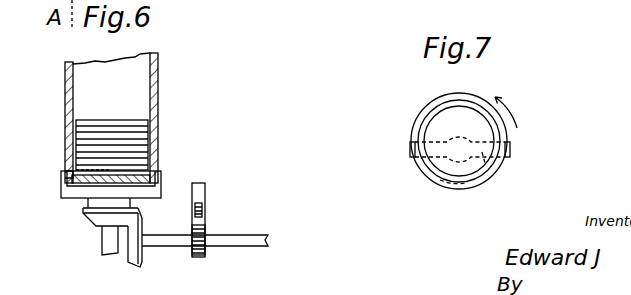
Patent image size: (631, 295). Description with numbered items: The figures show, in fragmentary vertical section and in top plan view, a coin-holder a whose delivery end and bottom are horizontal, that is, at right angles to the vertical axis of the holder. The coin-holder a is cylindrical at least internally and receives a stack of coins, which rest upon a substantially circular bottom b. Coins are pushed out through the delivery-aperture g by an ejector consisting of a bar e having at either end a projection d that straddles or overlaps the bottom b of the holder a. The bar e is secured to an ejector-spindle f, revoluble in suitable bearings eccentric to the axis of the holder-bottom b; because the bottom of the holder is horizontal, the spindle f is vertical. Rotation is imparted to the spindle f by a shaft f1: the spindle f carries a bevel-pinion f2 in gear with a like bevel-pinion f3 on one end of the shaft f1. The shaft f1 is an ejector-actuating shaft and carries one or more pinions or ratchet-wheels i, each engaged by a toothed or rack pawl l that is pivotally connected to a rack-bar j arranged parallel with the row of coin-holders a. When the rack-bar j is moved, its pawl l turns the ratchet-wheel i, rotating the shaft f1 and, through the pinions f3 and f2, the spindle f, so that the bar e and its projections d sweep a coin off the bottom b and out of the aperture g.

In FIG. 6, the coin-holder a is at (158, 89).
In FIG. 7, the coin-holder a is at (481, 99).
In FIG. 6, the bottom b is at (80, 190).
In FIG. 7, the bottom b is at (459, 141).
In FIG. 6, the projection d is at (61, 180).
In FIG. 7, the projection d is at (410, 152).
In FIG. 6, the ejector bar e is at (88, 182).
In FIG. 7, the ejector bar e is at (487, 173).
In FIG. 6, the delivery-aperture g is at (65, 176).
In FIG. 7, the delivery-aperture g is at (436, 111).
In FIG. 6, the ejector-spindle f is at (102, 241).
In FIG. 6, the shaft f1 is at (169, 238).
In FIG. 6, the bevel-pinion f2 is at (86, 215).
In FIG. 6, the bevel-pinion f3 is at (135, 253).
In FIG. 6, the ratchet-wheel i is at (200, 257).
In FIG. 6, the rack-bar j is at (205, 188).
In FIG. 6, the rack pawl l is at (203, 219).